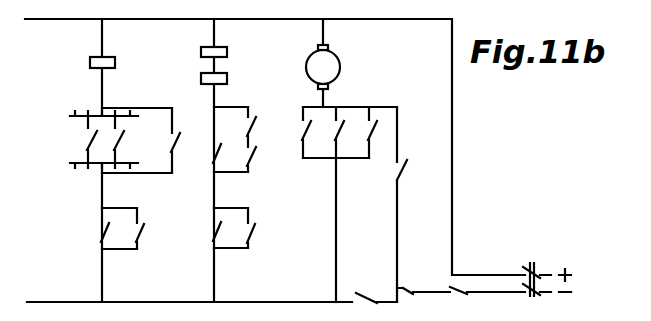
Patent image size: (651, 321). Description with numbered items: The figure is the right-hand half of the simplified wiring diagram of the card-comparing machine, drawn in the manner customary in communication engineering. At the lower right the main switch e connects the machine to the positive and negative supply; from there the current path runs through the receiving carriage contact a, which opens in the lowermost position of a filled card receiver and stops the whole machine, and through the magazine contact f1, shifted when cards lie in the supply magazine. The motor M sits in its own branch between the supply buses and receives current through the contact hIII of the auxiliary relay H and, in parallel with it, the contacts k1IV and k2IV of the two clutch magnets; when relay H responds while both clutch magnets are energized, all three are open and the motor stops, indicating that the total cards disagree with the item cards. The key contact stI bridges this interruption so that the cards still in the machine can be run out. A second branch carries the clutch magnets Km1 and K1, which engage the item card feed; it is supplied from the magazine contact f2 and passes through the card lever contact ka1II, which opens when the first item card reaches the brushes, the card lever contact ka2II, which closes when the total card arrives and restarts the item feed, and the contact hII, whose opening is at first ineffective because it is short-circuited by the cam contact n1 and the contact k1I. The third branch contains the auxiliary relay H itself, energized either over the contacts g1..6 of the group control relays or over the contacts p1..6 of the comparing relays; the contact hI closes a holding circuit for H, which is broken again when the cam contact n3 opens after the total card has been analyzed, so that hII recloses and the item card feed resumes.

The auxiliary relay H is at (112, 64).
The clutch magnet Km1 is at (239, 51).
The clutch magnet K1 is at (230, 78).
The motor M is at (323, 67).
The contacts of relays P p1..6 is at (70, 139).
The contacts of group control relays G g1..6 is at (141, 139).
The contact of relay H hI is at (184, 140).
The contact of relay H hII is at (226, 159).
The contact of relay H hIII is at (316, 132).
The contact of clutch magnet K1 k1I is at (262, 125).
The cam contact n1 is at (263, 154).
The cam contact n3 is at (92, 233).
The contact of clutch magnet K1 k1IV is at (250, 179).
The contact of clutch magnet K2 k2IV is at (383, 132).
The card lever contact ka1II is at (267, 229).
The card lever contact ka2II is at (201, 236).
The contact of key stI is at (412, 204).
The magazine contact f2 is at (375, 307).
The magazine contact f1 is at (423, 280).
The receiving carriage contact a is at (487, 300).
The main switch e is at (547, 272).